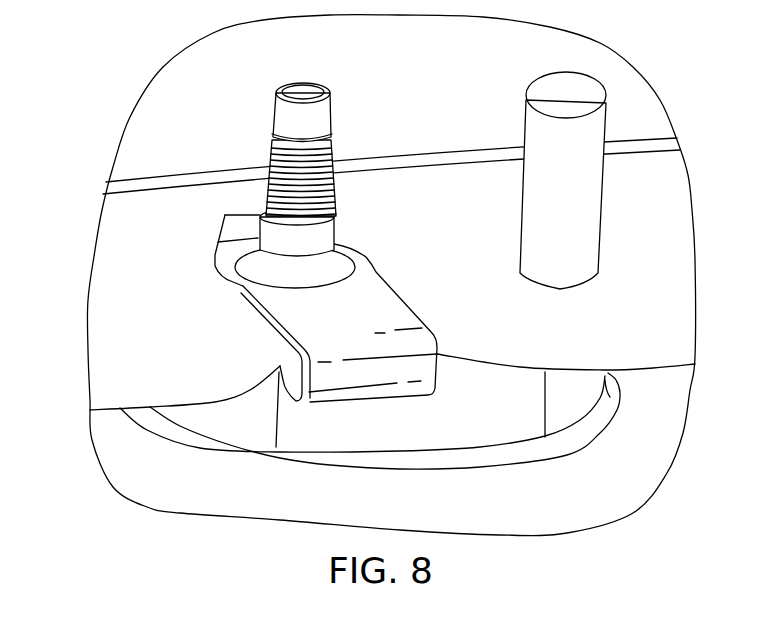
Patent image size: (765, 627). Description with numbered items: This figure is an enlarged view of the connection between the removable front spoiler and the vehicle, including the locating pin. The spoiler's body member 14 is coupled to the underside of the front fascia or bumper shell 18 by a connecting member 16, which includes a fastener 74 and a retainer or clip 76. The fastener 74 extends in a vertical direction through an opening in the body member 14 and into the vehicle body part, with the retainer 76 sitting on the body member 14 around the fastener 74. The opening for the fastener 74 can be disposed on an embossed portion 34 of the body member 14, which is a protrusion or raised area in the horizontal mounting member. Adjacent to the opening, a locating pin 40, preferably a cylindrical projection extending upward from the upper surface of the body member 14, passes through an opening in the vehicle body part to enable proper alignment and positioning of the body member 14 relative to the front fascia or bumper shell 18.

The body member 14 is at (562, 512).
The connecting member 16 is at (337, 228).
The front fascia or bumper shell 18 is at (127, 347).
The embossed portion 34 is at (205, 447).
The locating pin 40 is at (555, 92).
The fastener 74 is at (275, 113).
The retainer 76 is at (367, 308).